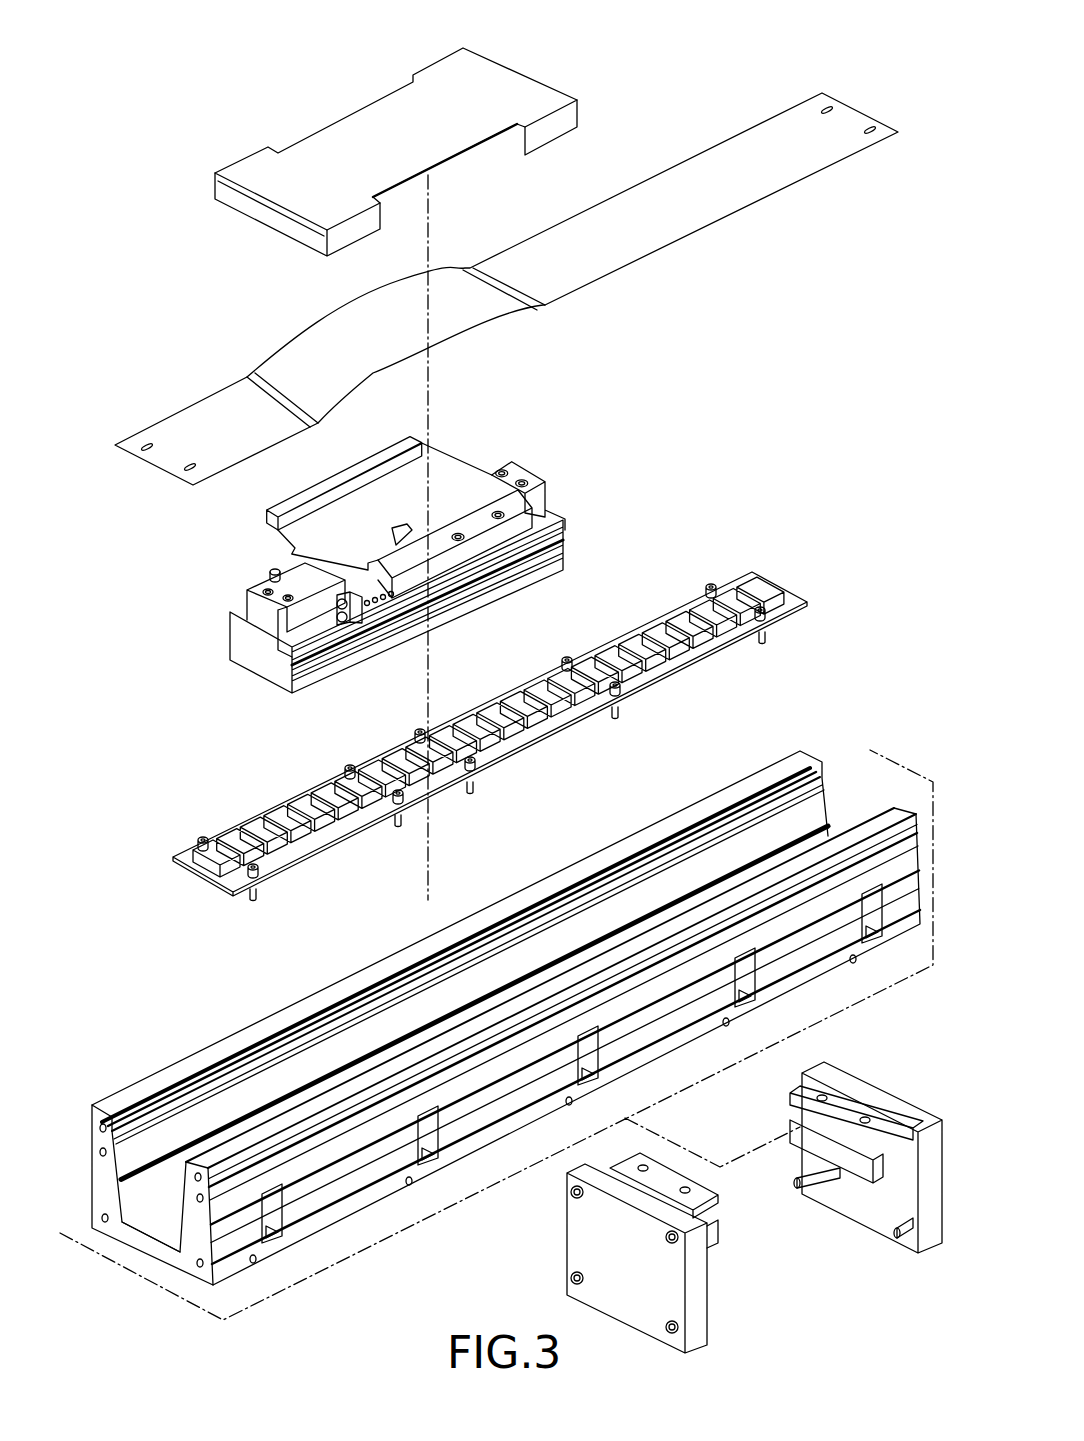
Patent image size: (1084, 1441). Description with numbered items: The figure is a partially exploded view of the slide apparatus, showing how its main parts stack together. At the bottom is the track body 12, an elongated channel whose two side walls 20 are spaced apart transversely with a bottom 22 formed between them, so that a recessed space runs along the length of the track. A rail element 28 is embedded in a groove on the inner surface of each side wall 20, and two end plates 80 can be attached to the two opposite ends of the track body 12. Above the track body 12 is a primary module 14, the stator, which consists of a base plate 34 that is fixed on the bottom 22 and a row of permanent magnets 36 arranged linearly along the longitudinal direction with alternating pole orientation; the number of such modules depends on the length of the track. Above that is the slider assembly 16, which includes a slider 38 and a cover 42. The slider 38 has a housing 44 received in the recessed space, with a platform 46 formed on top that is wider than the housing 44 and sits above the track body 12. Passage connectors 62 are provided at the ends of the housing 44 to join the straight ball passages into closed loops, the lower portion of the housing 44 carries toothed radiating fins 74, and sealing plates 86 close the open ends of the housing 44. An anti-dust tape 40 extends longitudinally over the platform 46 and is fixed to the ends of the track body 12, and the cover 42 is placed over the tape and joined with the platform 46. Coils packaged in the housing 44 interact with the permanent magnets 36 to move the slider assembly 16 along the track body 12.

The track body 12 is at (502, 1046).
The primary module 14 is at (497, 756).
The slider assembly 16 is at (355, 664).
The side wall 20 is at (205, 1240).
The bottom 22 is at (155, 1245).
The rail element 28 is at (170, 1105).
The base plate 34 is at (640, 678).
The permanent magnets 36 is at (528, 688).
The slider 38 is at (385, 482).
The anti-dust tape 40 is at (687, 175).
The cover 42 is at (388, 108).
The housing 44 is at (548, 565).
The platform 46 is at (282, 547).
The passage connector 62 is at (356, 622).
The radiating fins 74 is at (447, 600).
The end plates 80 is at (592, 1228).
The sealing plates 86 is at (248, 653).